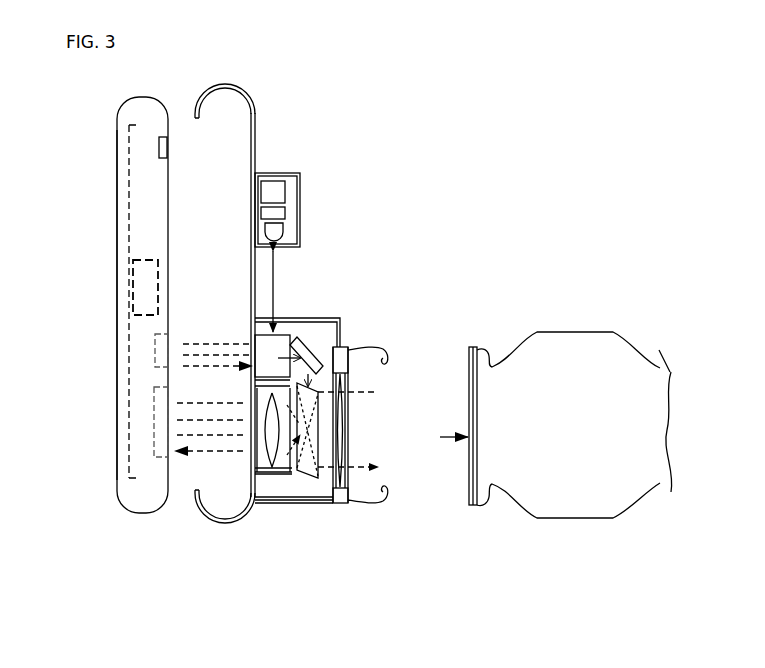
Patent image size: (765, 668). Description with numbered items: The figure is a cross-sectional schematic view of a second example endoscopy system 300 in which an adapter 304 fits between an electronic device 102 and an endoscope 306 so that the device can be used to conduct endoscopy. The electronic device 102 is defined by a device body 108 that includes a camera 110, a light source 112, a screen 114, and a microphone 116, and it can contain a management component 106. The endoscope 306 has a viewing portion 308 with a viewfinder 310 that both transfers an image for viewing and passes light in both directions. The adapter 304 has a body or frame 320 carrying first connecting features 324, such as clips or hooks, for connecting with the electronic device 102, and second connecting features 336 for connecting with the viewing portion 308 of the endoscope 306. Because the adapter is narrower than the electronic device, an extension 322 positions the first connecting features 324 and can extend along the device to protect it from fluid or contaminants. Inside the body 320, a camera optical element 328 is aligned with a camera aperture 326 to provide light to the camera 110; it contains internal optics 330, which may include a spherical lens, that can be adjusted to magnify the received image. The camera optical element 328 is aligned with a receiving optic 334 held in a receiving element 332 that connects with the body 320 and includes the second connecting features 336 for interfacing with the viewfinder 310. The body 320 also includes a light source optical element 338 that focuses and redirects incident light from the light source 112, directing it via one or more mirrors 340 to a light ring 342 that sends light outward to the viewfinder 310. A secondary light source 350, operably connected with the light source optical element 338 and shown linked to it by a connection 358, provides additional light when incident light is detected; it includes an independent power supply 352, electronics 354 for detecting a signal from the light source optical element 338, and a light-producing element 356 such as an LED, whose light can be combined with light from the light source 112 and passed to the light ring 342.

The electronic device 102 is at (103, 507).
The management component 106 is at (133, 292).
The device body 108 is at (160, 221).
The camera 110 is at (155, 397).
The light source 112 is at (155, 345).
The screen 114 is at (117, 255).
The microphone 116 is at (160, 153).
The endoscopy system 300 is at (480, 198).
The adapter 304 is at (328, 565).
The endoscope 306 is at (617, 527).
The viewing portion 308 is at (475, 506).
The viewfinder 310 is at (440, 437).
The body 320 is at (300, 503).
The extension 322 is at (256, 128).
The first connecting features 324 is at (228, 86).
The camera aperture 326 is at (258, 455).
The camera optical element 328 is at (280, 474).
The internal optics 330 is at (252, 474).
The receiving element 332 is at (343, 504).
The receiving optic 334 is at (340, 440).
The second connecting features 336 is at (380, 348).
The light source optical element 338 is at (288, 336).
The mirror 340 is at (305, 343).
The light ring 342 is at (342, 422).
The secondary light source 350 is at (292, 174).
The independent power supply 352 is at (286, 190).
The electronics 354 is at (286, 212).
The light-producing element 356 is at (284, 232).
The connection 358 is at (271, 286).